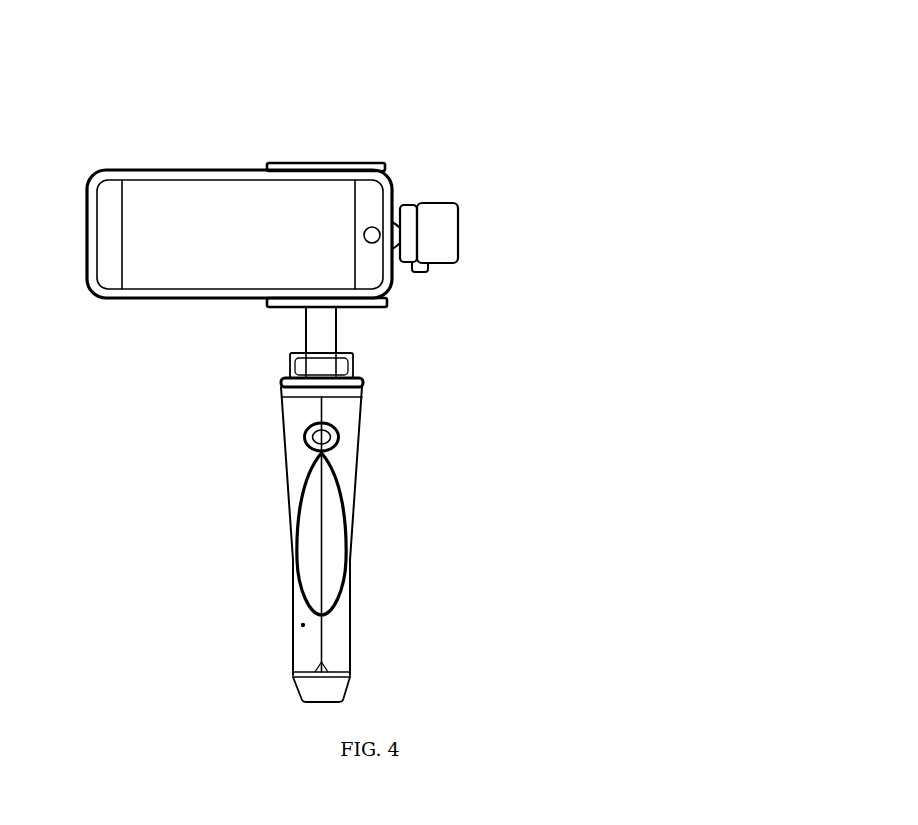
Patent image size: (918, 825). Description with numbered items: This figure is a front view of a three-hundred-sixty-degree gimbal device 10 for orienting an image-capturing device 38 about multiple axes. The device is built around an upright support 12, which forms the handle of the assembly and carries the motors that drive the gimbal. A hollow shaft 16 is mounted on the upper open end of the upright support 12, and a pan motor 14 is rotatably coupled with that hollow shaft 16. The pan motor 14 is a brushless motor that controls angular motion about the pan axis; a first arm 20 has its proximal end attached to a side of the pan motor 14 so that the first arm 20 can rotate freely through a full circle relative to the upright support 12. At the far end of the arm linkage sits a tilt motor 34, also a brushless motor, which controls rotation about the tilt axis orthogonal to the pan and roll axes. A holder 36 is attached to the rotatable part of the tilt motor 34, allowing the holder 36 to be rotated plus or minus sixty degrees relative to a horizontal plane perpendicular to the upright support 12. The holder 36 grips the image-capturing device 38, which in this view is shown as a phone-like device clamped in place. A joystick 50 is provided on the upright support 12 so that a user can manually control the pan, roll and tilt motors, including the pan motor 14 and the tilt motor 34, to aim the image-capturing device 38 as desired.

The 360-degree gimbal device 10 is at (344, 105).
The upright support 12 is at (315, 540).
The pan motor 14 is at (342, 362).
The hollow shaft 16 is at (292, 387).
The first arm 20 is at (325, 325).
The tilt motor 34 is at (430, 228).
The holder 36 is at (325, 162).
The image-capturing device 38 is at (164, 170).
The joystick 50 is at (320, 427).